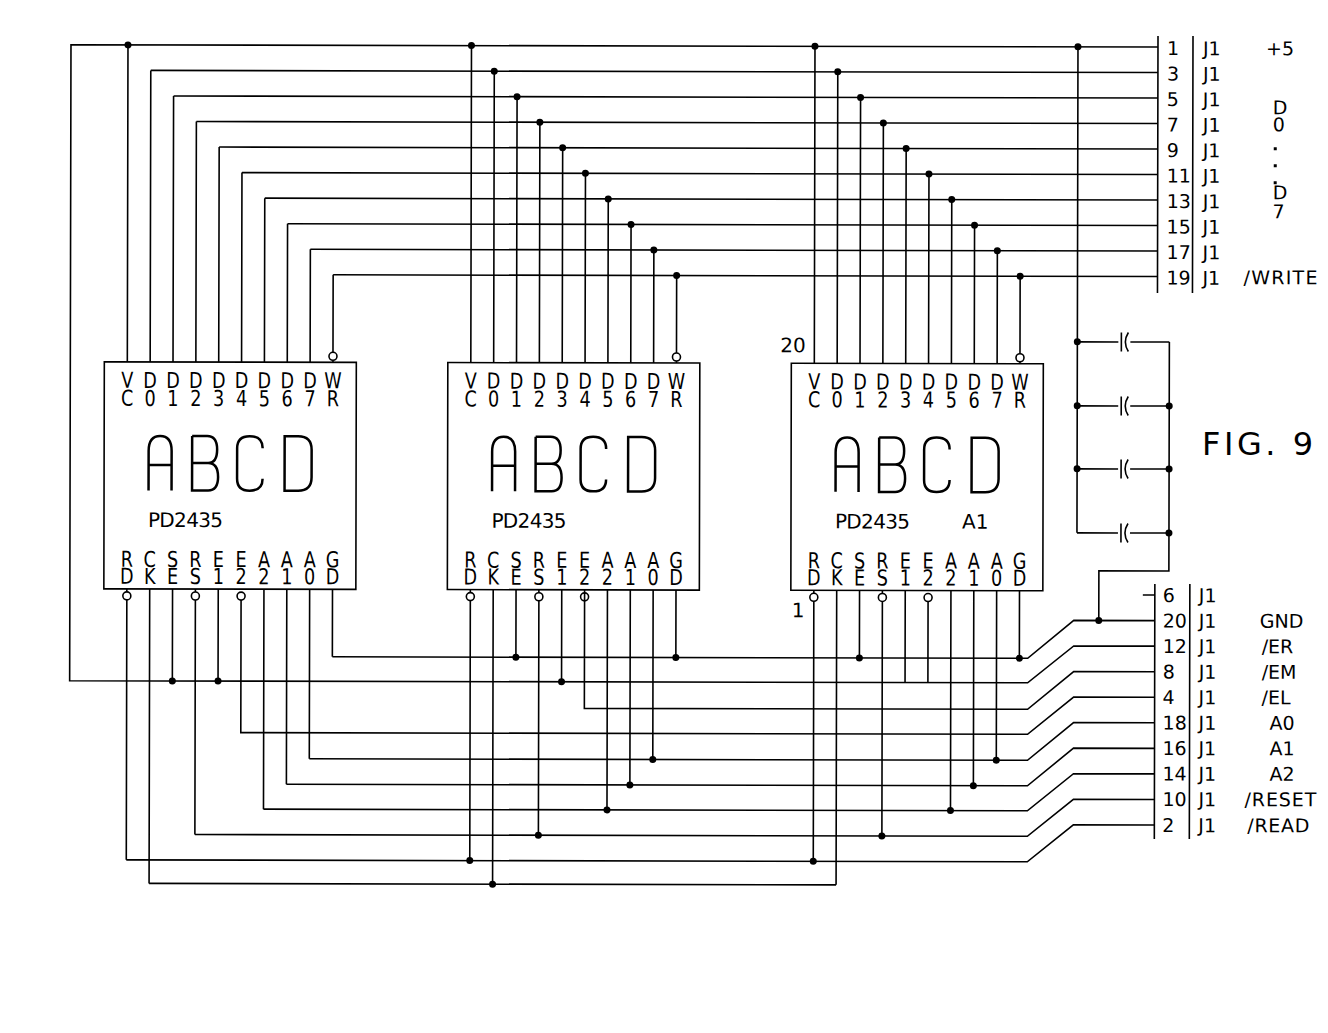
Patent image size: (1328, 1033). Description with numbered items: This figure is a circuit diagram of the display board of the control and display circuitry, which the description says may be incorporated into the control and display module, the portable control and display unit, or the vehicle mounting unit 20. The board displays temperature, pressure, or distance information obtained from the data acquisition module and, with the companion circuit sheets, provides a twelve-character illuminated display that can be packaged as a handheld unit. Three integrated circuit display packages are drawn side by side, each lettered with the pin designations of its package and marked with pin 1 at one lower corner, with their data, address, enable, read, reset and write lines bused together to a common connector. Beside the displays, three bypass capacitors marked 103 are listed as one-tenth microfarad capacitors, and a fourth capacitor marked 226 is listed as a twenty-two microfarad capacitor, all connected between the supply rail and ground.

The vehicle mounting unit 20 is at (224, 464).
The display module pin 1 is at (568, 465).
The 0.01 uF bypass capacitor 103 is at (1123, 335).
The 22 uF electrolytic capacitor 226 is at (1125, 534).